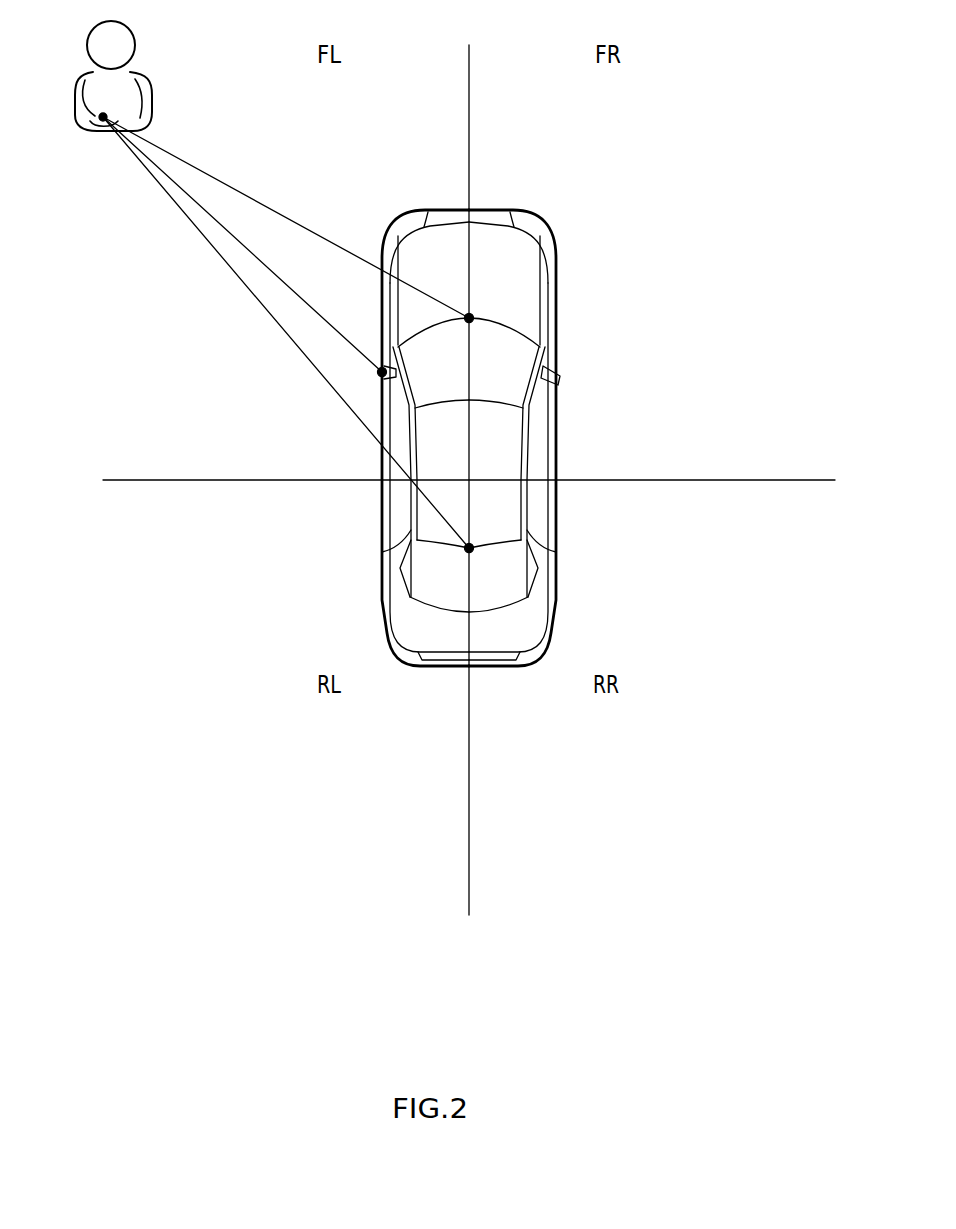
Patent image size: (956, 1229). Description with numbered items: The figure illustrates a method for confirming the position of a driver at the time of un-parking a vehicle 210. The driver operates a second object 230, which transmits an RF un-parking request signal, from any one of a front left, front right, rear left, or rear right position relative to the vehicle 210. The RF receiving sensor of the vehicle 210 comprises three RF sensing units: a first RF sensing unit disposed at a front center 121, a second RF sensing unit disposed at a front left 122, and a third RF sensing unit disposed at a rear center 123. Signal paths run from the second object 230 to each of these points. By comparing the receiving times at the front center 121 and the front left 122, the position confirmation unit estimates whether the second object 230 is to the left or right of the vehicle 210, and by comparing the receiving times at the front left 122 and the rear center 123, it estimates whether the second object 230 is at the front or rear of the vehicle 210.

The vehicle 210 is at (528, 217).
The front center 121 is at (473, 318).
The front left 122 is at (380, 372).
The rear center 123 is at (473, 548).
The second object 230 is at (102, 122).